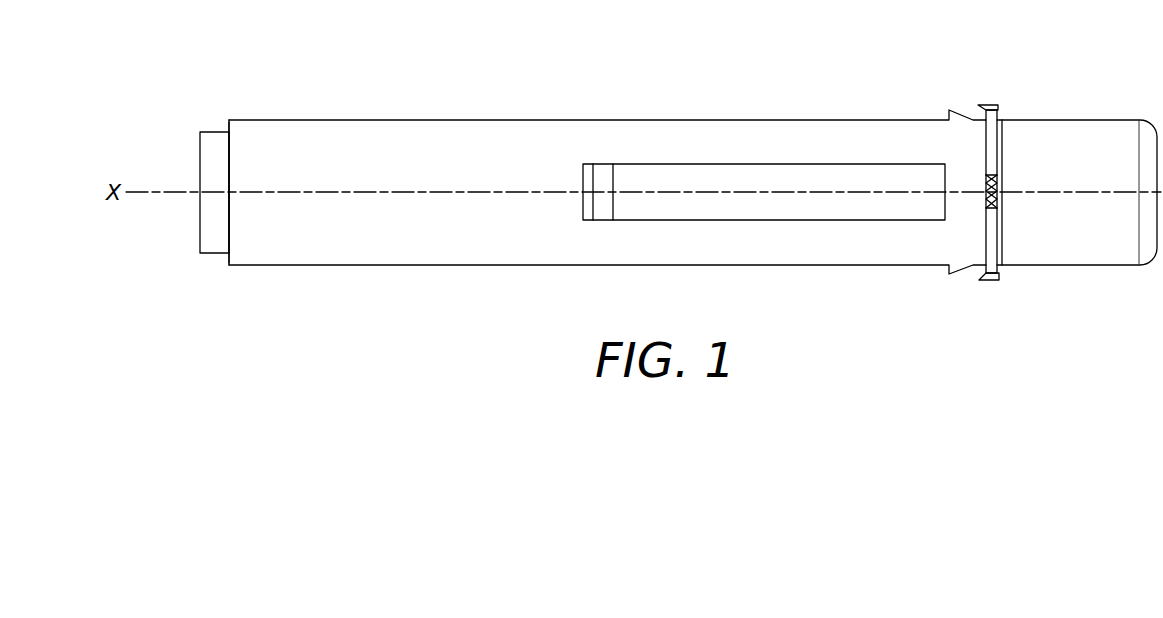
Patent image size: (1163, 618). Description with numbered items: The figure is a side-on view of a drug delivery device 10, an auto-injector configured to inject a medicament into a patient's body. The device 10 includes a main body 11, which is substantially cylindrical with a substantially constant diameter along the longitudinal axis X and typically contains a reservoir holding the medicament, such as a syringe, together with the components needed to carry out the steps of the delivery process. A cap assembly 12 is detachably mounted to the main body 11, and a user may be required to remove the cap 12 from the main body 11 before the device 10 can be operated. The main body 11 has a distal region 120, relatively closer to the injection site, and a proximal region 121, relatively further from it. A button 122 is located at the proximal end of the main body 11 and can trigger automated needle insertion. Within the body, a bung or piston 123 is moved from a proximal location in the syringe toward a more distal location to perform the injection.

The drug delivery device 10 is at (1003, 79).
The main body 11 is at (922, 128).
The cap assembly 12 is at (1072, 128).
The distal region 120 is at (1130, 269).
The proximal region 121 is at (250, 255).
The button 122 is at (213, 243).
The bung or piston 123 is at (603, 210).